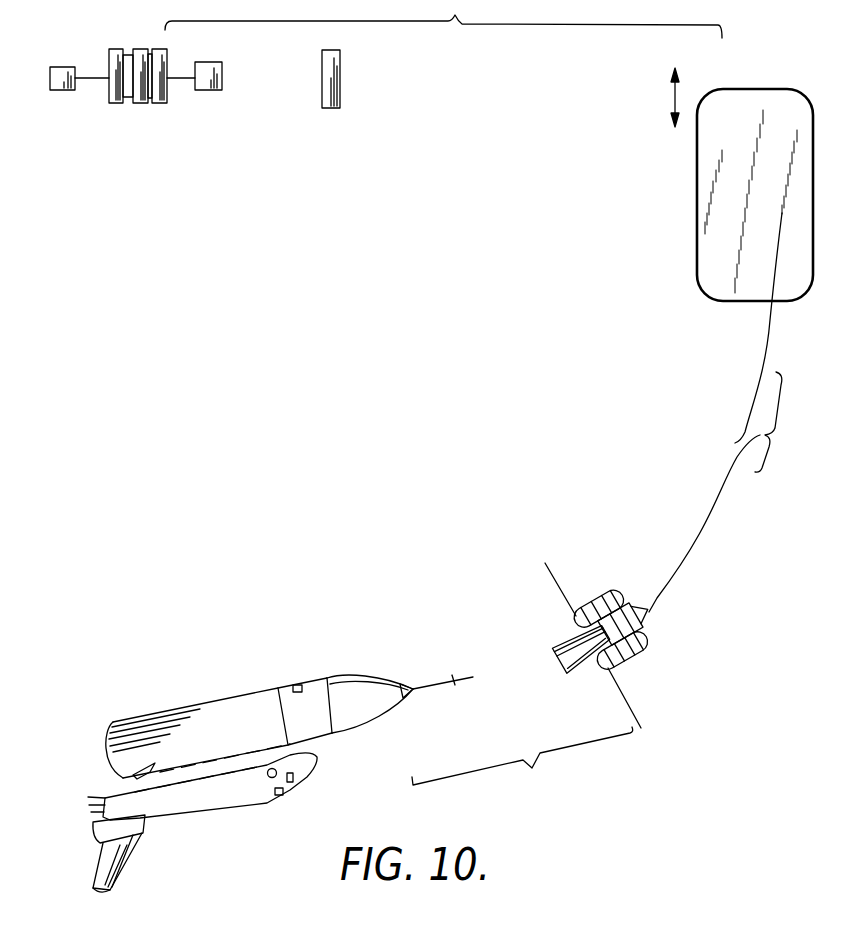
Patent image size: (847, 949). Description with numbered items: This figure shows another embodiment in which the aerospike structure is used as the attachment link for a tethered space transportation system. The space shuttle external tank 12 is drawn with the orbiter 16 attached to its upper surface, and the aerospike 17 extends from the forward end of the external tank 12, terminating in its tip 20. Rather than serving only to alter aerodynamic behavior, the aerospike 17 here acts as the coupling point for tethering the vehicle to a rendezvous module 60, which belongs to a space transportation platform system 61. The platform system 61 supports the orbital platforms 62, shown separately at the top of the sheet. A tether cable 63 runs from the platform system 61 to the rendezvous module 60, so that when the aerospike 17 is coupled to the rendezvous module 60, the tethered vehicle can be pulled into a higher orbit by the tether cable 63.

The external tank 12 is at (240, 705).
The orbiter 16 is at (200, 783).
The aerospike 17 is at (430, 683).
The tip 20 is at (459, 677).
The rendezvous module 60 is at (576, 674).
The space transportation platform system 61 is at (730, 95).
The orbital platforms 62 is at (163, 52).
The tether cable 63 is at (696, 548).